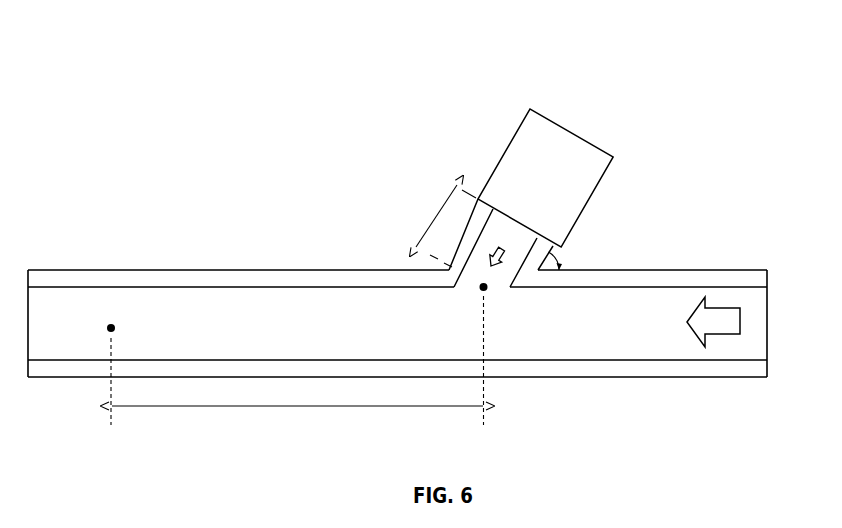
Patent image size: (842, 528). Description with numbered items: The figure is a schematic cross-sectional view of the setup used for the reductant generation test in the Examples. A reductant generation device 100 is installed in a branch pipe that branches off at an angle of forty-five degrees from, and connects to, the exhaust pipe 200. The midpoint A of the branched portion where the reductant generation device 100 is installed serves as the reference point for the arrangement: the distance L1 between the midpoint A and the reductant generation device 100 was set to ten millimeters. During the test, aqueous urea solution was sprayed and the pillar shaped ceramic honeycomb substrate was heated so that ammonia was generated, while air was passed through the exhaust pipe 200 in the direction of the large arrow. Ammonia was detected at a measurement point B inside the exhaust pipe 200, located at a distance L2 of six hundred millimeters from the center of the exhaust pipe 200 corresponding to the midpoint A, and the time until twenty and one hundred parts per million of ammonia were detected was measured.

The reductant generation device 100 is at (565, 147).
The exhaust pipe 200 is at (247, 277).
The midpoint of the branched portion A is at (476, 354).
The measurement point B is at (101, 371).
The distance between midpoint A and the reductant generation device L1 is at (438, 226).
The distance from the branch midpoint to the measurement point L2 is at (297, 427).